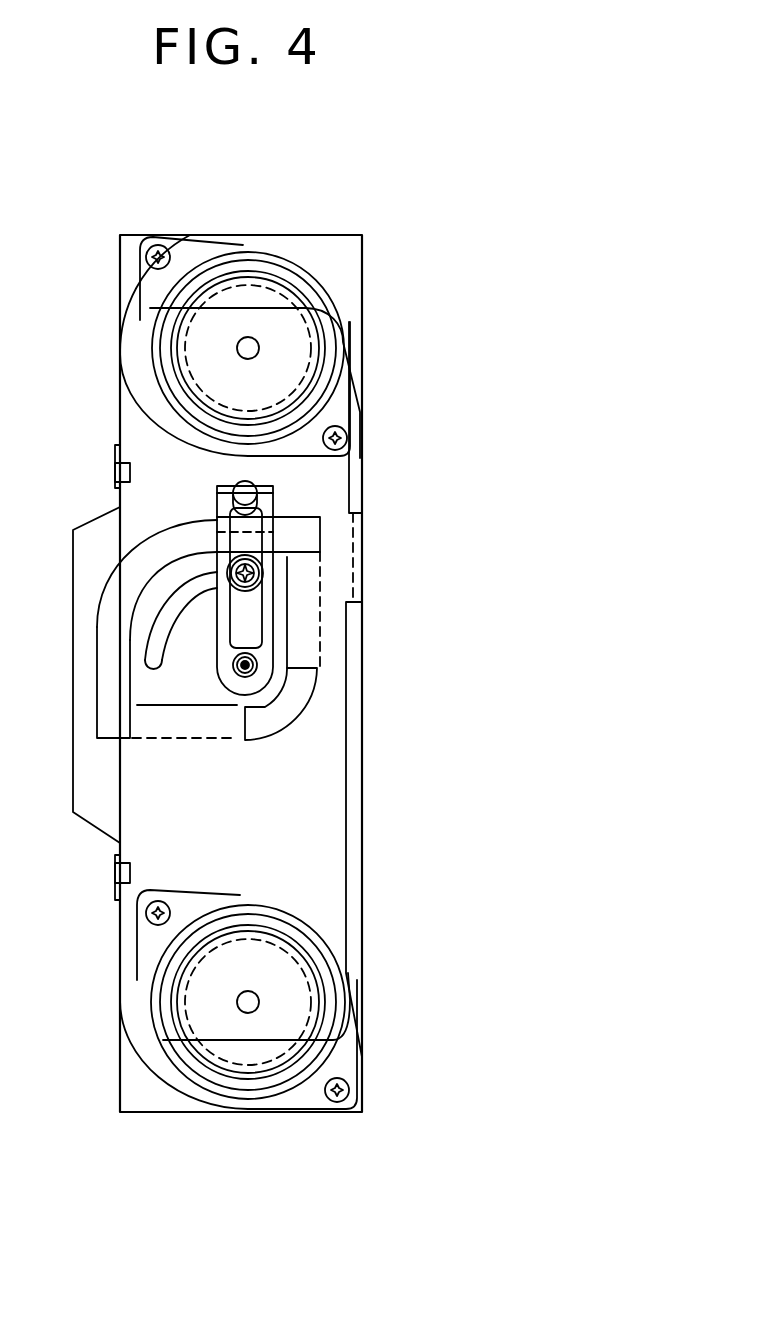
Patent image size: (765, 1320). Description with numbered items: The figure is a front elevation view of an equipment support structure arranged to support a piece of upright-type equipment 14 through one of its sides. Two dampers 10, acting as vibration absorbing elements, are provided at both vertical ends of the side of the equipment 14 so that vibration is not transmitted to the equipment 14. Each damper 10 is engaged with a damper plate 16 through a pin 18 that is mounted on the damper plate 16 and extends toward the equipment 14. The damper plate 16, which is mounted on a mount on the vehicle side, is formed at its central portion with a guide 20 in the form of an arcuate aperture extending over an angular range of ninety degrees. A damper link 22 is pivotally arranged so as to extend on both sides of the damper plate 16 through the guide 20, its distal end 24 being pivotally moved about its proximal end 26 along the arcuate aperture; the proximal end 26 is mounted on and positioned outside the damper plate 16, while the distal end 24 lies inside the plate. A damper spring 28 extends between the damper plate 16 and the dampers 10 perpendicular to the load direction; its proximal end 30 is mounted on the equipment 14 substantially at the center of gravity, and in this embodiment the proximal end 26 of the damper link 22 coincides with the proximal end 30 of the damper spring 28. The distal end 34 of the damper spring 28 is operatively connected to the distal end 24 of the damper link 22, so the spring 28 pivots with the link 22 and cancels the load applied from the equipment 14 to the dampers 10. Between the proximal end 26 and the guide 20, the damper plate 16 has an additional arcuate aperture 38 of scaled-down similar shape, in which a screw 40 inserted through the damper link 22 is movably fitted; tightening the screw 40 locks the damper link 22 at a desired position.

The damper 10 is at (290, 300).
The equipment 14 is at (150, 1108).
The damper plate 16 is at (346, 820).
The pin 18 is at (258, 352).
The guide 20 is at (320, 533).
The damper link 22 is at (273, 503).
The distal end 24 is at (258, 483).
The proximal end 26 is at (257, 663).
The damper spring 28 is at (218, 538).
The proximal end 30 is at (258, 668).
The distal end 34 is at (238, 482).
The additional arcuate aperture 38 is at (167, 620).
The screw 40 is at (263, 573).